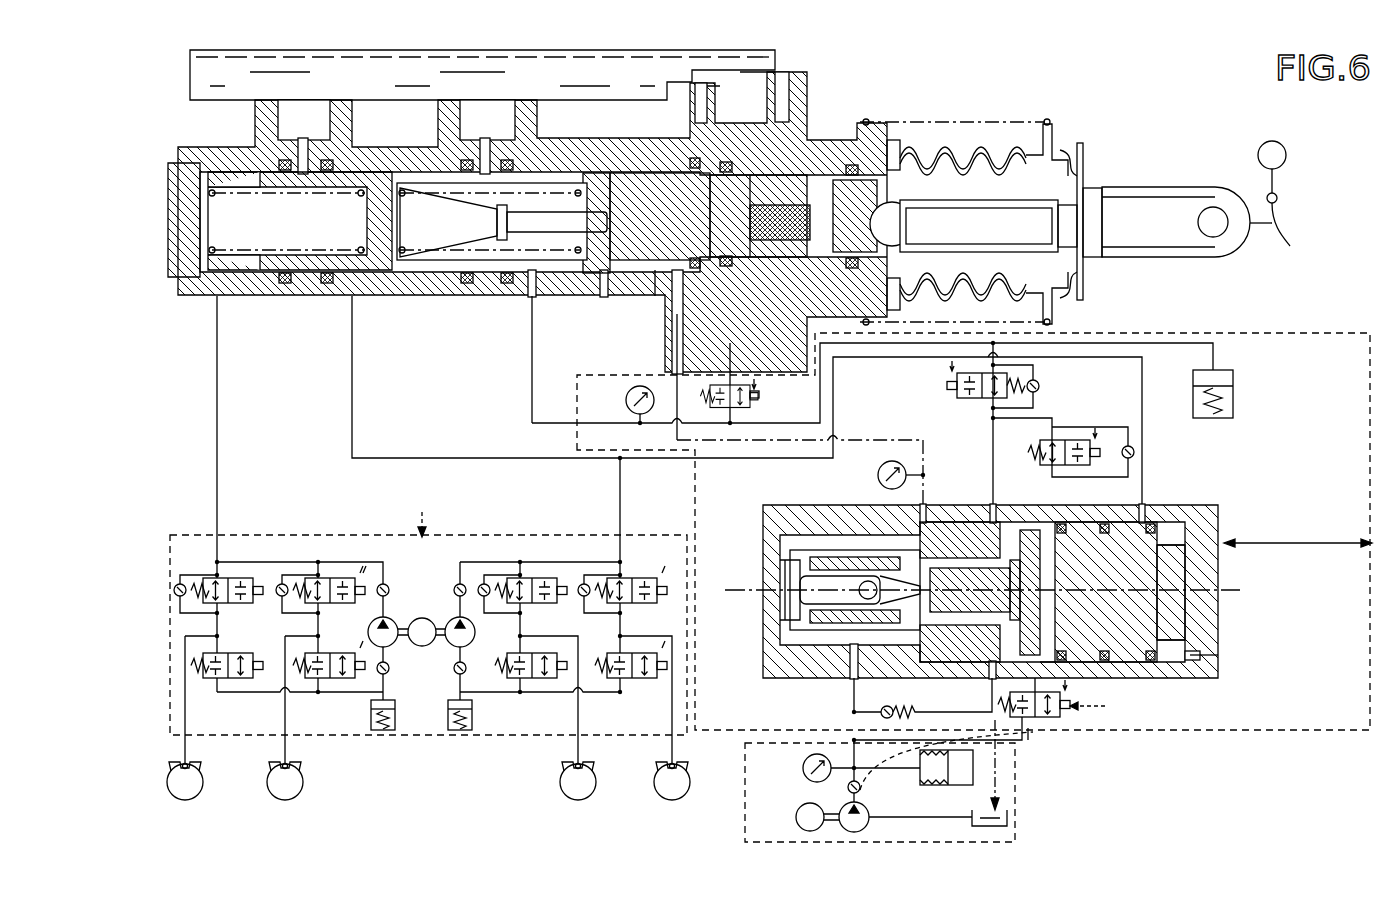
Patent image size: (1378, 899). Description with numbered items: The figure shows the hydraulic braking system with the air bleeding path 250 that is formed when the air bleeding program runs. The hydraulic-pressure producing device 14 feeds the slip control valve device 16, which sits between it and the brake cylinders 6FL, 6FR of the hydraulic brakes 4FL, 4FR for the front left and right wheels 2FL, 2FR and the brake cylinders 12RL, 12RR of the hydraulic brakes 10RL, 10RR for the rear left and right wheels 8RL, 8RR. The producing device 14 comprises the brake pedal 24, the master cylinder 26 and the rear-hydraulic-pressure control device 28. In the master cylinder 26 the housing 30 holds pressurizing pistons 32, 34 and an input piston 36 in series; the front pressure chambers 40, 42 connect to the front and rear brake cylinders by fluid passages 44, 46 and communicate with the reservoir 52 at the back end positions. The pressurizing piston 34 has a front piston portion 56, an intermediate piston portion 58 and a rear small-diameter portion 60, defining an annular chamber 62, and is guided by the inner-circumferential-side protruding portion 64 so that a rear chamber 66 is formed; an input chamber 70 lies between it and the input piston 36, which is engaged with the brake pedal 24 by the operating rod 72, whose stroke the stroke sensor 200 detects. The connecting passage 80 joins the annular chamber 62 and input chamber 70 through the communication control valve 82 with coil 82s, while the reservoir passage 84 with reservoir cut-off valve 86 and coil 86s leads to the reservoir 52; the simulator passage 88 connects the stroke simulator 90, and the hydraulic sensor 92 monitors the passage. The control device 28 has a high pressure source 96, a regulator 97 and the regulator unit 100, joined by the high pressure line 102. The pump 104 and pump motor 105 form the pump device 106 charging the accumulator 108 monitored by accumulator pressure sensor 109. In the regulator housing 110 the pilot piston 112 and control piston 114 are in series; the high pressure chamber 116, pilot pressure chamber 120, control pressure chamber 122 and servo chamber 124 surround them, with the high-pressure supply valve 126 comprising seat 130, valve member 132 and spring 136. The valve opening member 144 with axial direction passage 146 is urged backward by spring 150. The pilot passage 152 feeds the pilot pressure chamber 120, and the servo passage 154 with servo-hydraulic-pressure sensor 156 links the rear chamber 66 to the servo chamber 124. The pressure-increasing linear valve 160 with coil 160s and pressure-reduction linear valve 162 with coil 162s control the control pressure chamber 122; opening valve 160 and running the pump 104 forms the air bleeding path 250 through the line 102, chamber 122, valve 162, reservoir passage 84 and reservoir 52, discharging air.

The hydraulic-pressure producing device 14 is at (1235, 309).
The slip control valve device 16 is at (183, 538).
The brake pedal 24 is at (1289, 246).
The master cylinder 26 is at (1092, 114).
The rear-hydraulic-pressure control device 28 is at (1152, 456).
The housing 30 is at (250, 296).
The pressurizing piston 32 is at (386, 262).
The pressurizing piston 34 is at (528, 273).
The input piston 36 is at (975, 192).
The front pressure chamber 40 is at (232, 178).
The front pressure chamber 42 is at (436, 297).
The fluid passage 44 is at (217, 394).
The fluid passage 46 is at (352, 395).
The reservoir 52 is at (190, 96).
The front piston portion 56 is at (600, 290).
The intermediate piston portion 58 is at (646, 290).
The rear small-diameter portion 60 is at (800, 176).
The annular chamber 62 is at (556, 296).
The inner-circumferential-side protruding portion 64 is at (697, 312).
The rear chamber 66 is at (680, 292).
The input chamber 70 is at (836, 190).
The operating rod 72 is at (1048, 212).
The connecting passage 80 is at (528, 329).
The communication control valve 82 is at (738, 407).
The coil 82s is at (760, 397).
The reservoir passage 84 is at (994, 438).
The reservoir cut-off valve 86 is at (990, 398).
The coil 86s is at (948, 385).
The simulator passage 88 is at (1142, 356).
The stroke simulator 90 is at (1233, 372).
The hydraulic sensor 92 is at (627, 395).
The high pressure source 96 is at (747, 763).
The regulator 97 is at (1218, 672).
The regulator unit 100 is at (1084, 334).
The high pressure line 102 is at (1028, 744).
The pump 104 is at (858, 807).
The pump motor 105 is at (796, 817).
The pump device 106 is at (830, 835).
The accumulator 108 is at (958, 786).
The accumulator pressure sensor 109 is at (803, 766).
The housing 110 is at (1178, 680).
The pilot piston 112 is at (1135, 545).
The control piston 114 is at (1084, 535).
The high pressure chamber 116 is at (806, 592).
The pilot pressure chamber 120 is at (1198, 657).
The control pressure chamber 122 is at (1056, 668).
The servo chamber 124 is at (942, 535).
The high-pressure supply valve 126 is at (871, 536).
The seat 130 is at (922, 698).
The valve member 132 is at (845, 650).
The spring 136 is at (808, 574).
The valve opening member 144 is at (1026, 530).
The axial direction passage 146 is at (968, 652).
The spring 150 is at (930, 660).
The pilot passage 152 is at (648, 463).
The servo passage 154 is at (865, 440).
The servo-hydraulic-pressure sensor 156 is at (886, 464).
The pressure-increasing linear valve 160 is at (1042, 722).
The coil 160s is at (1063, 718).
The pressure-reduction linear valve 162 is at (1064, 440).
The coil 162s is at (1098, 448).
The stroke sensor 200 is at (1272, 142).
The air bleeding path 250 is at (1008, 740).
The front right wheel 2FR is at (181, 797).
The front left wheel 2FL is at (292, 789).
The hydraulic brake 4FR is at (181, 766).
The hydraulic brake 4FL is at (270, 777).
The brake cylinder 6FR is at (187, 764).
The brake cylinder 6FL is at (290, 764).
The rear right wheel 8RR is at (571, 791).
The rear left wheel 8RL is at (669, 791).
The hydraulic brake 10RR is at (545, 773).
The hydraulic brake 10RL is at (655, 774).
The brake cylinder 12RR is at (570, 764).
The brake cylinder 12RL is at (666, 764).